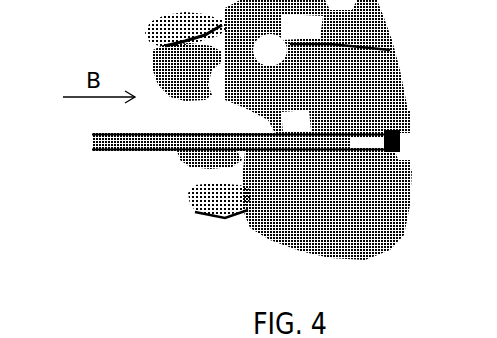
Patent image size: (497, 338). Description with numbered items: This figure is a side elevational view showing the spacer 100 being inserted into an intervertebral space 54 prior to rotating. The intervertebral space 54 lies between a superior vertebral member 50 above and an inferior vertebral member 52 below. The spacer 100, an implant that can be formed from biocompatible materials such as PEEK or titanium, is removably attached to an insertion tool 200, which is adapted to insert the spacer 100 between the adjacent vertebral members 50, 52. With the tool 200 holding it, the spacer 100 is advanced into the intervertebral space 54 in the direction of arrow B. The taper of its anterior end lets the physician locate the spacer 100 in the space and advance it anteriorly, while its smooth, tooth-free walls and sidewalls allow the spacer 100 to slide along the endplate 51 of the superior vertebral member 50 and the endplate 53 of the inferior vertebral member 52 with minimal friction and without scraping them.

The superior vertebral member 50 is at (400, 83).
The endplate 51 is at (406, 130).
The inferior vertebral member 52 is at (413, 205).
The endplate 53 is at (409, 157).
The intervertebral space 54 is at (397, 141).
The spacer 100 is at (412, 143).
The insertion tool 200 is at (174, 138).